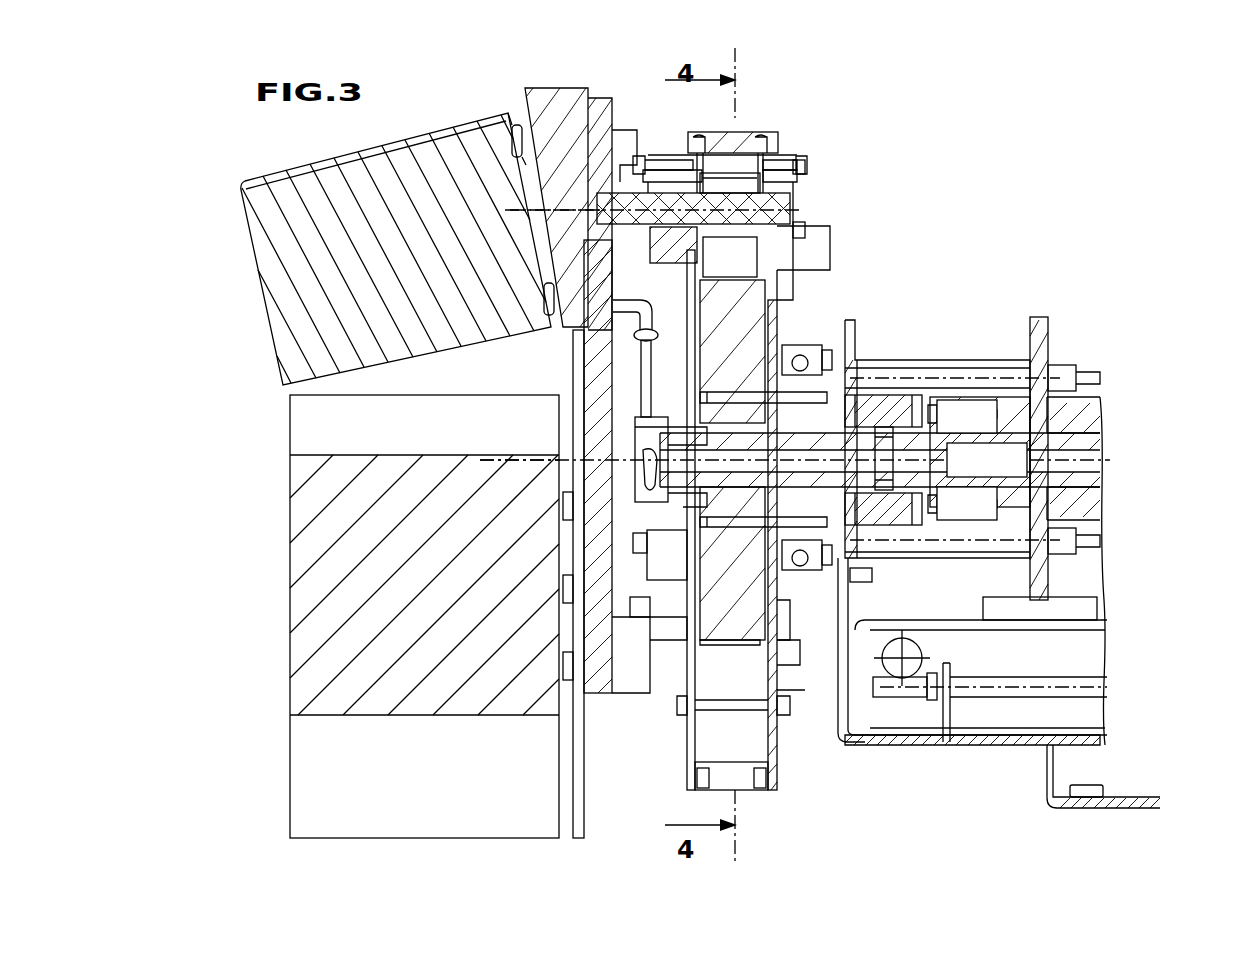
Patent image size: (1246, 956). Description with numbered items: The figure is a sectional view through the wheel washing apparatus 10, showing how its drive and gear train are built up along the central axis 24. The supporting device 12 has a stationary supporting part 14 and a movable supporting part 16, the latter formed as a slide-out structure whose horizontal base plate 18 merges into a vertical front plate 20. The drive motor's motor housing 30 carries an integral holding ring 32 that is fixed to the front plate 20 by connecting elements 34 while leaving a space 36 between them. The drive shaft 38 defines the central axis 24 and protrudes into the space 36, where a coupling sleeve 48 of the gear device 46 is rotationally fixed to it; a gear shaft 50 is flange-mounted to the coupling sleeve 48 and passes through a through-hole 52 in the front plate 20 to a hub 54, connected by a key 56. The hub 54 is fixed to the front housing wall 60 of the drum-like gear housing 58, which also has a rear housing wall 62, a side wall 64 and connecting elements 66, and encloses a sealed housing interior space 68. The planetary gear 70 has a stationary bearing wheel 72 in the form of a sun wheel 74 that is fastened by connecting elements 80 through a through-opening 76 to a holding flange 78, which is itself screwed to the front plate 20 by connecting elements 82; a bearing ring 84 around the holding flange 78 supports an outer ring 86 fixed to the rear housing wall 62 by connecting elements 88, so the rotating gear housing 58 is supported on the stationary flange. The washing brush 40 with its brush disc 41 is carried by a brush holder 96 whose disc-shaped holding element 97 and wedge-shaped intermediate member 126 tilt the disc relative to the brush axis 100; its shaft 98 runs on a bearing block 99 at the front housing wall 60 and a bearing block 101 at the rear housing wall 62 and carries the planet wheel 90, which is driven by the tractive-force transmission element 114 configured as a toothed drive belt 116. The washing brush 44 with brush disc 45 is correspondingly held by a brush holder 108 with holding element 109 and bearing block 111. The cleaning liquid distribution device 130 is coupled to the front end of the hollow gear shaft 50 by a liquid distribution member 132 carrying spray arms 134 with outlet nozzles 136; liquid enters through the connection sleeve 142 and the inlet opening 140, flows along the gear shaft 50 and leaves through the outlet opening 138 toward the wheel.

The wheel washing apparatus 10 is at (1022, 246).
The supporting device 12 is at (960, 762).
The stationary supporting part 14 is at (1095, 800).
The movable supporting part 16 is at (875, 745).
The horizontal base plate 18 is at (1025, 748).
The vertical front plate 20 is at (845, 700).
The central axis 24 is at (480, 457).
The motor housing 30 is at (1090, 415).
The holding ring 32 is at (1047, 322).
The connecting elements 34 is at (1013, 362).
The space 36 is at (985, 360).
The drive shaft 38 is at (1088, 460).
The washing brush 40 is at (447, 140).
The brush disc 41 is at (517, 122).
The washing brush 44 is at (308, 548).
The brush disc 45 is at (583, 805).
The gear device 46 is at (795, 240).
The coupling sleeve 48 is at (1065, 372).
The gear shaft 50 is at (868, 482).
The through-hole 52 is at (855, 575).
The hub 54 is at (695, 508).
The key 56 is at (640, 432).
The gear housing 58 is at (745, 108).
The front housing wall 60 is at (688, 765).
The rear housing wall 62 is at (773, 735).
The side wall 64 is at (742, 143).
The connecting elements 66 is at (690, 735).
The housing interior space 68 is at (768, 793).
The planetary gear 70 is at (757, 782).
The stationary bearing wheel 72 is at (730, 257).
The sun wheel 74 is at (773, 665).
The through-opening 76 is at (752, 630).
The holding flange 78 is at (832, 395).
The connecting elements 80 is at (762, 397).
The connecting elements 82 is at (868, 358).
The bearing ring 84 is at (803, 348).
The outer ring 86 is at (822, 354).
The connecting elements 88 is at (790, 282).
The planet wheel 90 is at (720, 187).
The brush holder 96 is at (621, 158).
The holding element 97 is at (604, 110).
The shaft 98 is at (773, 207).
The bearing block 99 is at (595, 265).
The brush axis 100 is at (505, 213).
The bearing block 101 is at (795, 180).
The brush holder 108 is at (625, 637).
The holding element 109 is at (595, 680).
The bearing block 111 is at (673, 625).
The tractive-force transmission element 114 is at (727, 647).
The drive belt 116 is at (748, 177).
The wedge-shaped intermediate member 126 is at (558, 100).
The cleaning liquid distribution device 130 is at (645, 390).
The liquid distribution member 132 is at (640, 442).
The spray arms 134 is at (640, 340).
The outlet nozzles 136 is at (625, 322).
The outlet opening 138 is at (645, 472).
The inlet opening 140 is at (963, 397).
The connection sleeve 142 is at (900, 517).